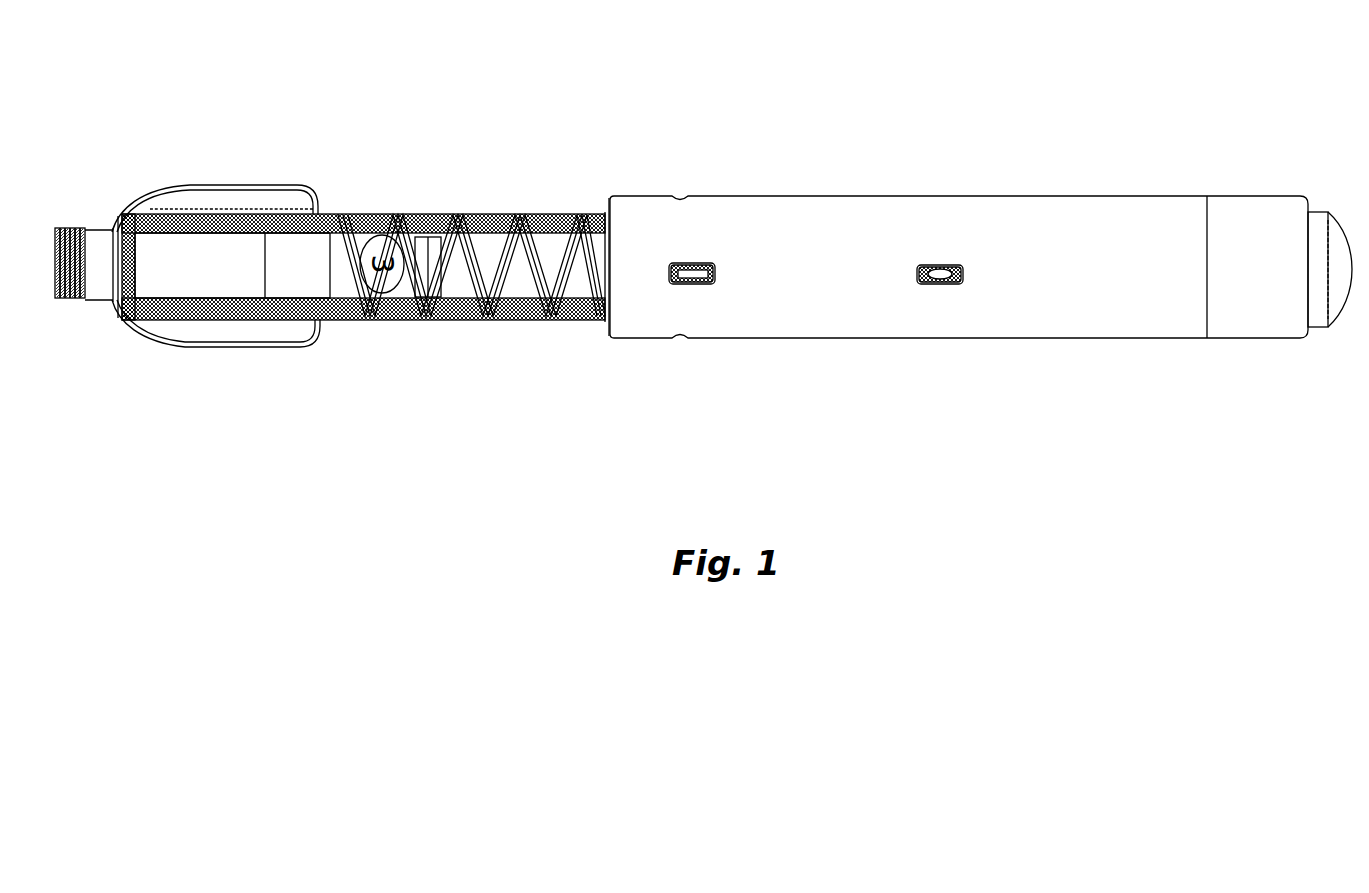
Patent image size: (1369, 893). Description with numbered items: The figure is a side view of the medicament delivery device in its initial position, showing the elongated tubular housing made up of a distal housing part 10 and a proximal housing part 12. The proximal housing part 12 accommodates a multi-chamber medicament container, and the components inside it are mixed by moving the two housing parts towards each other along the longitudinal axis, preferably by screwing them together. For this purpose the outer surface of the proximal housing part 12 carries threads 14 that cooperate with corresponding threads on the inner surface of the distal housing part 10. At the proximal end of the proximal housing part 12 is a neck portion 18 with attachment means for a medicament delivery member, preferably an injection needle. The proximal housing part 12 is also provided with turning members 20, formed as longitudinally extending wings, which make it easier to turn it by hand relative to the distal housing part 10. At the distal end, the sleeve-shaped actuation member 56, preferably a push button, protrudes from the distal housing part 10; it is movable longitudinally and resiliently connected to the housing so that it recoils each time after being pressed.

The distal housing part 10 is at (823, 277).
The proximal housing part 12 is at (205, 222).
The threads 14 is at (537, 283).
The neck portion 18 is at (88, 232).
The turning members 20 is at (270, 342).
The actuation member 56 is at (1323, 235).